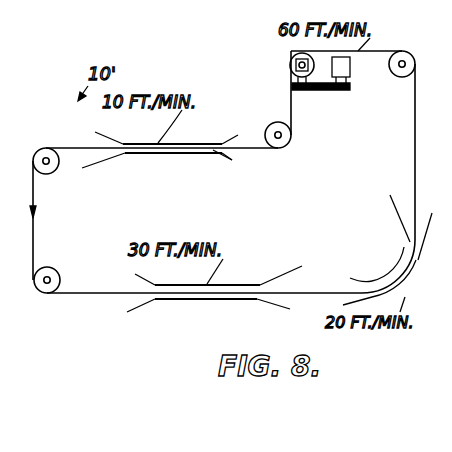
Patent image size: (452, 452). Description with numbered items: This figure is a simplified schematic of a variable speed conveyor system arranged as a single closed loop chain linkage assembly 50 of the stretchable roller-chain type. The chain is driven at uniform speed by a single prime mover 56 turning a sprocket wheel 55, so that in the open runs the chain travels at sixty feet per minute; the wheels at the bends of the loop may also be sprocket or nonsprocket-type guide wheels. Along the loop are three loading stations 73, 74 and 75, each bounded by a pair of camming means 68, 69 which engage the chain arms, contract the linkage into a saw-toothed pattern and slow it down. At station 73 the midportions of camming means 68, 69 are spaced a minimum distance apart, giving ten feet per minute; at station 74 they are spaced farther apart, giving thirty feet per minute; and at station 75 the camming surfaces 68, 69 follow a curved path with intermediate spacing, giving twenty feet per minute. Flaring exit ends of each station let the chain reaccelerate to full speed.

The chain linkage assembly 50 is at (30, 250).
The sprocket wheel 55 is at (55, 172).
The prime mover 56 is at (350, 77).
The camming means 68 is at (110, 165).
The camming means 69 is at (111, 132).
The loading station 73 is at (205, 166).
The loading station 74 is at (203, 308).
The loading station 75 is at (387, 253).